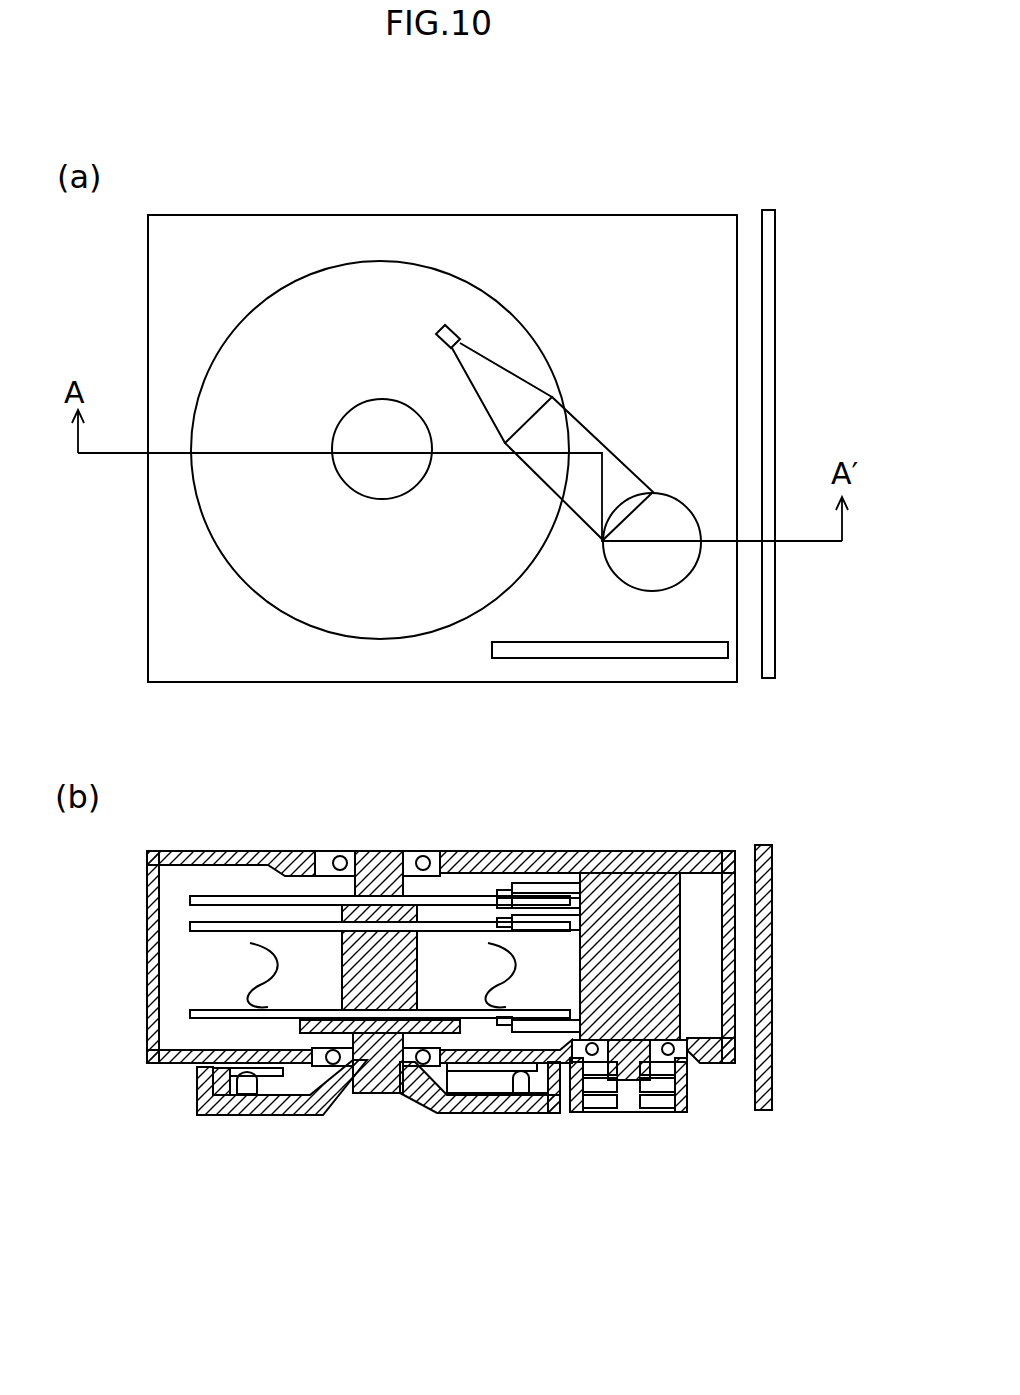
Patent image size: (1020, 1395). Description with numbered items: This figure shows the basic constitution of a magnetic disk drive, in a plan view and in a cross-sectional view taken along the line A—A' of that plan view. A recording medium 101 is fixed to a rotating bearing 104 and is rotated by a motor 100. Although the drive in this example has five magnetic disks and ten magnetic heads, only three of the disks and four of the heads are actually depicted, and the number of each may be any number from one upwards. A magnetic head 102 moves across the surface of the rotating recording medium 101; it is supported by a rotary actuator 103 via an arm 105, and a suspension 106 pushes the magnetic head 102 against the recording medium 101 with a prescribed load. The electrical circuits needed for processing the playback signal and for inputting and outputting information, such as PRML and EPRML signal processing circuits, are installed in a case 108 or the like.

The motor 100 is at (277, 1087).
The recording medium 101 is at (356, 262).
The magnetic head 102 is at (433, 338).
The rotary actuator 103 is at (628, 896).
The rotating bearing 104 is at (373, 1035).
The arm 105 is at (548, 470).
The suspension 106 is at (505, 395).
The case 108 is at (627, 650).